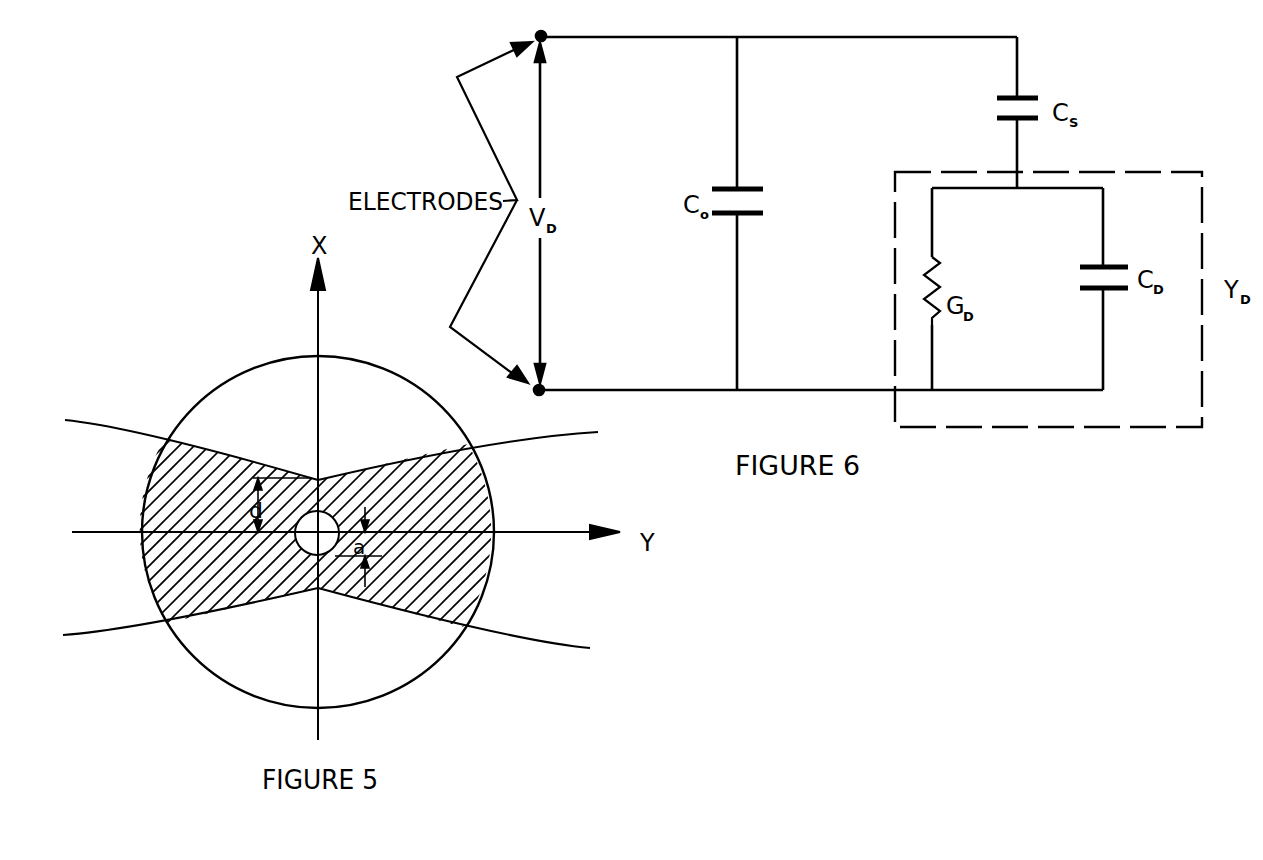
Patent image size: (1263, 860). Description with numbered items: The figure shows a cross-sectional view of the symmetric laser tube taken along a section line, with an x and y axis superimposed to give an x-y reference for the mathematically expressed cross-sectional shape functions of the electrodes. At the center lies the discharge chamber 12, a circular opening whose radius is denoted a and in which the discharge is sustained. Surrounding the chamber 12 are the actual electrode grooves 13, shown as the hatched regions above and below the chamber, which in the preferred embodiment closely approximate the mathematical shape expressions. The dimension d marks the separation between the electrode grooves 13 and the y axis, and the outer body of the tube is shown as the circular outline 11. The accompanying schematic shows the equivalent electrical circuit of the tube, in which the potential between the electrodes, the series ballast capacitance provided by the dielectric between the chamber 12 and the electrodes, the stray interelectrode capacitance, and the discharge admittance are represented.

The disk-shaped piezoelectric element 11 is at (318, 508).
The chamber 12 is at (250, 602).
The electrode grooves 13 is at (350, 532).